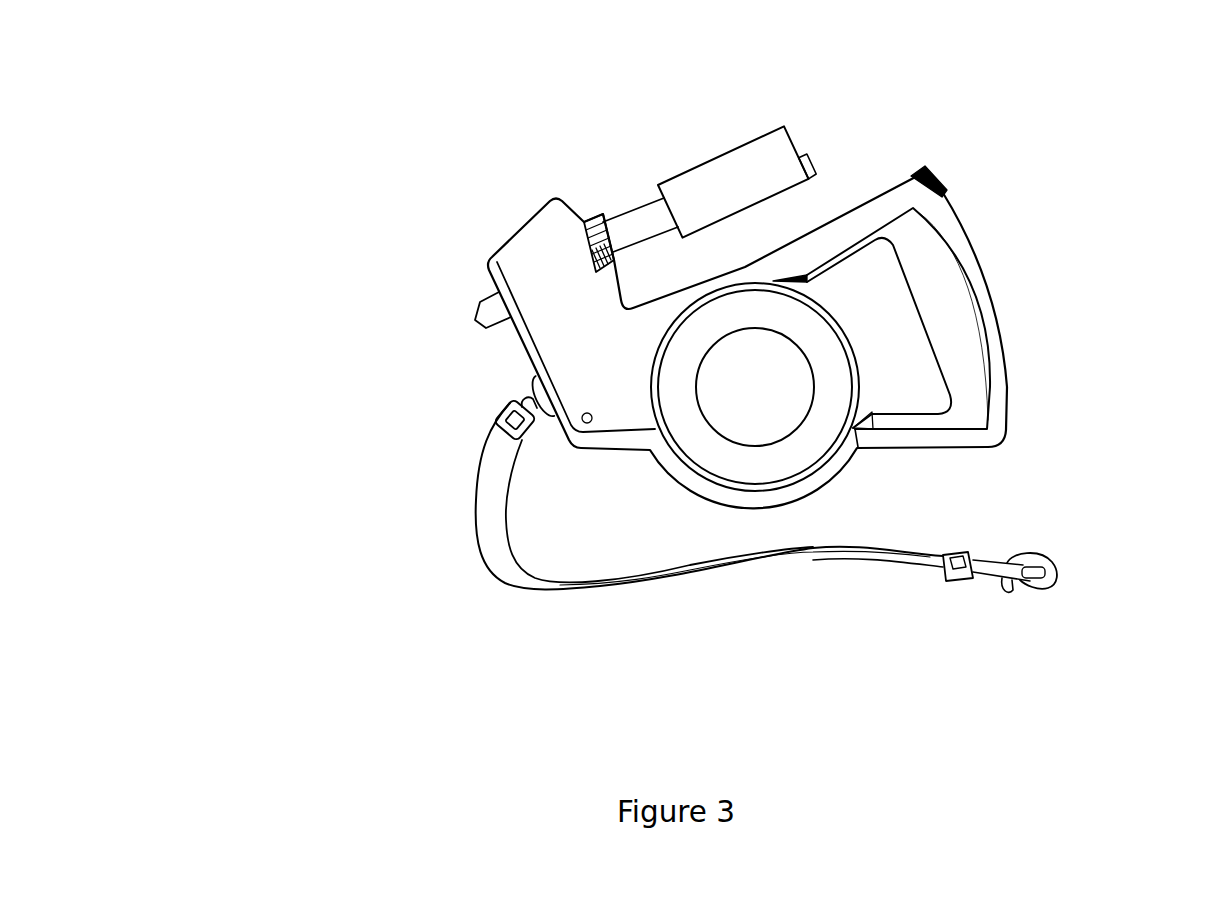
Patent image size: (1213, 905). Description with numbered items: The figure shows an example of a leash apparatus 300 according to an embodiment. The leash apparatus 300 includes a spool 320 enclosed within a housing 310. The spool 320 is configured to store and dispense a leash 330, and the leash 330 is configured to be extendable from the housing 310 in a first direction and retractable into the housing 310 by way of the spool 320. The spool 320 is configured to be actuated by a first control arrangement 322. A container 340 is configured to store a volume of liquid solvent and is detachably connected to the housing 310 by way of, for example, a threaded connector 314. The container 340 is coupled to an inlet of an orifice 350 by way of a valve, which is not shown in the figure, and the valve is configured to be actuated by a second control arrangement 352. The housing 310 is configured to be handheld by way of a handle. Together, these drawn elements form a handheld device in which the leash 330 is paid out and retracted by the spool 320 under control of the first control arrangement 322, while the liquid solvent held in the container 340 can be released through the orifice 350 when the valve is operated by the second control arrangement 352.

The leash apparatus 300 is at (300, 150).
The housing 310 is at (530, 262).
The threaded connector 314 is at (603, 243).
The spool 320 is at (783, 402).
The first control arrangement 322 is at (928, 168).
The leash 330 is at (857, 555).
The container 340 is at (732, 182).
The orifice 350 is at (482, 303).
The second control arrangement 352 is at (805, 158).